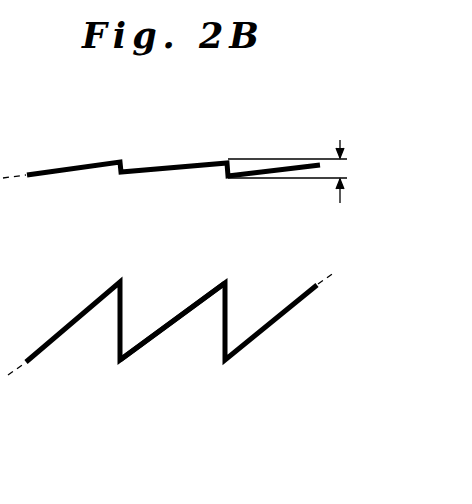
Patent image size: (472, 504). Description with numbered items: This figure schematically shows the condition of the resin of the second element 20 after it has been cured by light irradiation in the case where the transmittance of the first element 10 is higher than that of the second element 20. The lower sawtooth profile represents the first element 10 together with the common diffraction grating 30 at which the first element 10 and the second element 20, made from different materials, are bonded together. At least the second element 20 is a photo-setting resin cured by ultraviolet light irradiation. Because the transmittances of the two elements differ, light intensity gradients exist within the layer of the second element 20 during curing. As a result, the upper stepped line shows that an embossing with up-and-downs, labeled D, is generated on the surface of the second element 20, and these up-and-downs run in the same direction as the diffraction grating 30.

The first element 10 is at (42, 358).
The second element 20 is at (40, 193).
The diffraction grating 30 is at (160, 328).